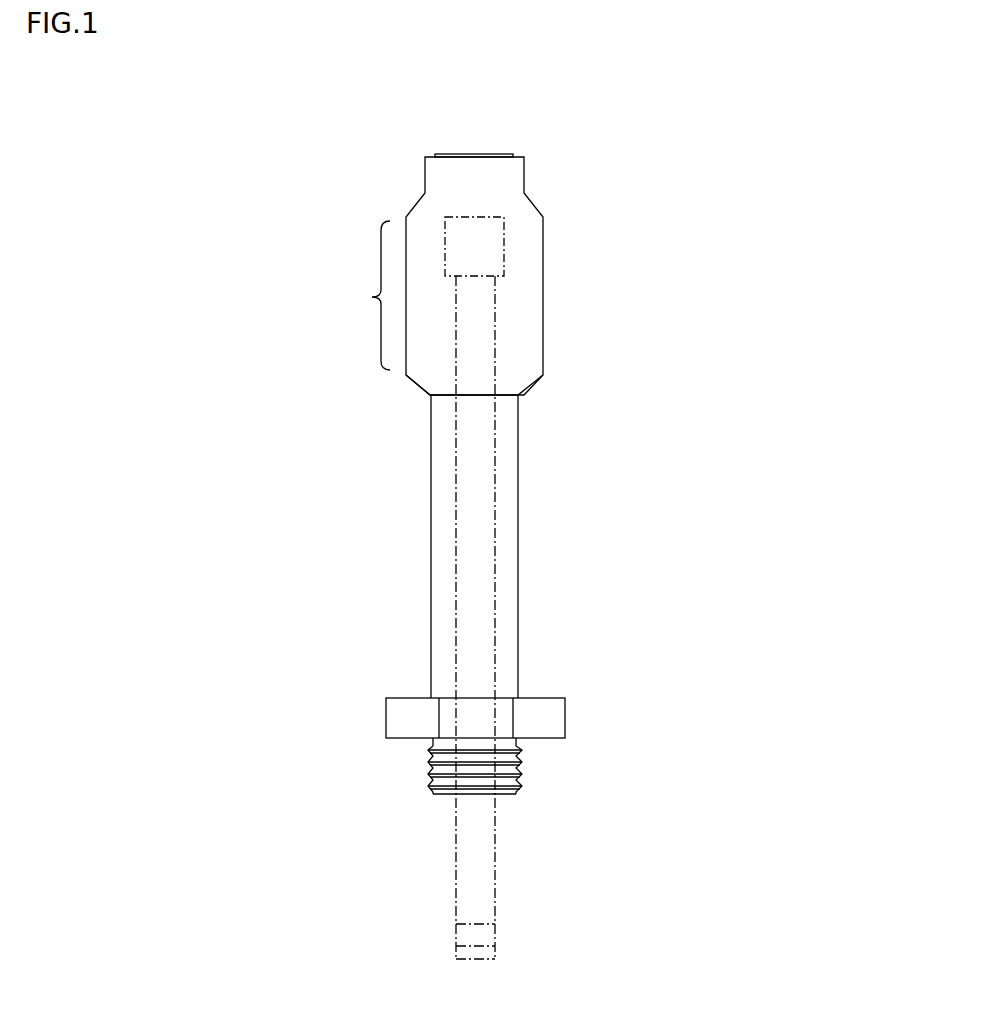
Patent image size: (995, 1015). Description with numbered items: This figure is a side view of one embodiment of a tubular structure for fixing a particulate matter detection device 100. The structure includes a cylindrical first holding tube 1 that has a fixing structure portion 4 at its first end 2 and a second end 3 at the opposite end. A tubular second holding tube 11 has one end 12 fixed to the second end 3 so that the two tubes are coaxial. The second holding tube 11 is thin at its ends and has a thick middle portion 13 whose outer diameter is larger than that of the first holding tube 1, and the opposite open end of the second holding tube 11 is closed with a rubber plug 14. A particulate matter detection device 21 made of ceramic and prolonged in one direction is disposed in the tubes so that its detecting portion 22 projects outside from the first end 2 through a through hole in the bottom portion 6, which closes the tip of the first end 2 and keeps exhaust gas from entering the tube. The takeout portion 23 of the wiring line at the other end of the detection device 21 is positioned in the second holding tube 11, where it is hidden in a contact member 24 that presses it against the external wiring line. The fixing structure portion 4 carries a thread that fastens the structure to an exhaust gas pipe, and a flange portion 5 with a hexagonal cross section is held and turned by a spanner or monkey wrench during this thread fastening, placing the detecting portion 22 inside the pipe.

The tubular structure for fixing particulate matter detection device 100 is at (910, 86).
The first holding tube 1 is at (558, 546).
The first end 2 is at (457, 776).
The second end 3 is at (518, 397).
The fixing structure portion 4 is at (525, 765).
The flange portion 5 is at (565, 707).
The bottom portion 6 is at (505, 792).
The second holding tube 11 is at (565, 276).
The one end 12 is at (430, 394).
The middle portion 13 is at (356, 295).
The plug 14 is at (478, 154).
The particulate matter detection device 21 is at (564, 762).
The detecting portion 22 is at (457, 935).
The takeout portion 23 is at (493, 240).
The contact member 24 is at (503, 262).